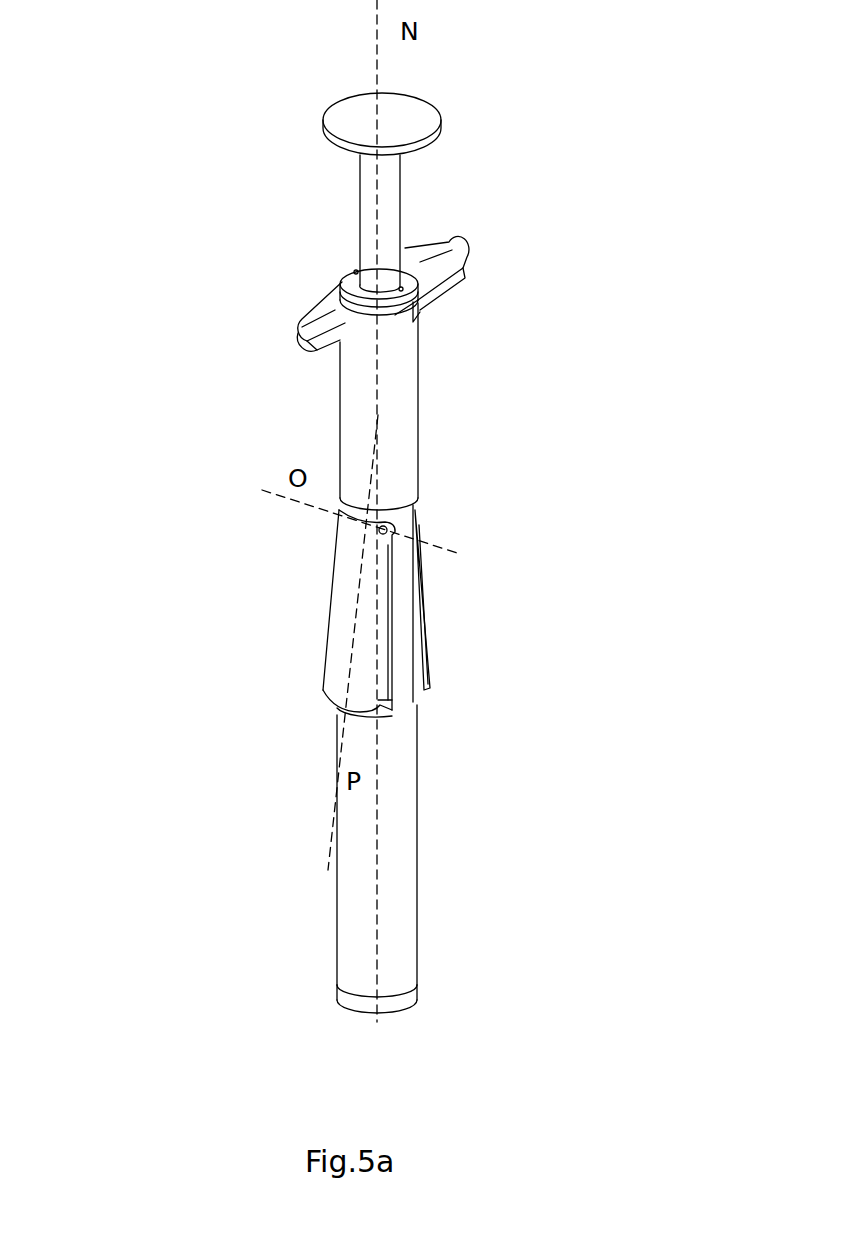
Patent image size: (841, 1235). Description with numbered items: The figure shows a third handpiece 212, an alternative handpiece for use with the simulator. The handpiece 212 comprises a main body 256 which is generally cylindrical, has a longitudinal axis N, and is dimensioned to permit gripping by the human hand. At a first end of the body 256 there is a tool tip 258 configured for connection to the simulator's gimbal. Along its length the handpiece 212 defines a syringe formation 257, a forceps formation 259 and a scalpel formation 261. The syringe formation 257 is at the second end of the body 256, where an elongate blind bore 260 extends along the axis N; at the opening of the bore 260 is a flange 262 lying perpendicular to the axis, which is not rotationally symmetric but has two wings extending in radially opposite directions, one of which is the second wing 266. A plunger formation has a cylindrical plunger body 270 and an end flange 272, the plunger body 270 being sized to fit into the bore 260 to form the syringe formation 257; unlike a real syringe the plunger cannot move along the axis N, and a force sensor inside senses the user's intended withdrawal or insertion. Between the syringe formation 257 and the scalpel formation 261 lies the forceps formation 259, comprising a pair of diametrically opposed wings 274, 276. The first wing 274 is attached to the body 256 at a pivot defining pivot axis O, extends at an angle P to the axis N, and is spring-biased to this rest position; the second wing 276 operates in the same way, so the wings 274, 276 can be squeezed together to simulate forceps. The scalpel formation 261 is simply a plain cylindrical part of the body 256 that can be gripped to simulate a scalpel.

The third handpiece 212 is at (578, 212).
The main body 256 is at (395, 732).
The syringe formation 257 is at (483, 130).
The tool tip 258 is at (402, 993).
The forceps formation 259 is at (478, 550).
The elongate blind bore 260 is at (410, 303).
The scalpel formation 261 is at (453, 897).
The flange 262 is at (297, 330).
The second wing 266 is at (430, 270).
The plunger body 270 is at (360, 205).
The end flange 272 is at (362, 127).
The first wing 274 is at (350, 555).
The second wing 276 is at (422, 585).